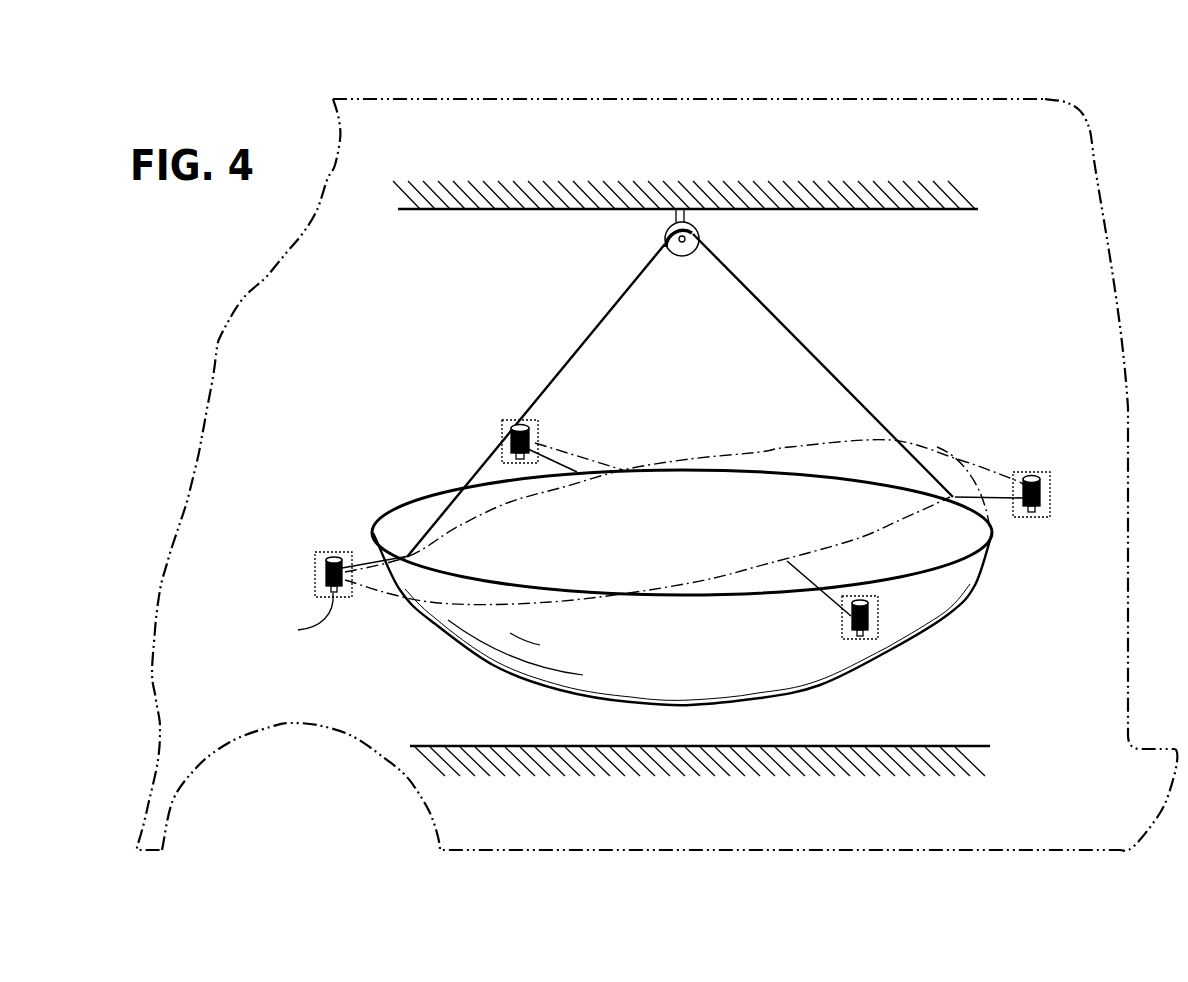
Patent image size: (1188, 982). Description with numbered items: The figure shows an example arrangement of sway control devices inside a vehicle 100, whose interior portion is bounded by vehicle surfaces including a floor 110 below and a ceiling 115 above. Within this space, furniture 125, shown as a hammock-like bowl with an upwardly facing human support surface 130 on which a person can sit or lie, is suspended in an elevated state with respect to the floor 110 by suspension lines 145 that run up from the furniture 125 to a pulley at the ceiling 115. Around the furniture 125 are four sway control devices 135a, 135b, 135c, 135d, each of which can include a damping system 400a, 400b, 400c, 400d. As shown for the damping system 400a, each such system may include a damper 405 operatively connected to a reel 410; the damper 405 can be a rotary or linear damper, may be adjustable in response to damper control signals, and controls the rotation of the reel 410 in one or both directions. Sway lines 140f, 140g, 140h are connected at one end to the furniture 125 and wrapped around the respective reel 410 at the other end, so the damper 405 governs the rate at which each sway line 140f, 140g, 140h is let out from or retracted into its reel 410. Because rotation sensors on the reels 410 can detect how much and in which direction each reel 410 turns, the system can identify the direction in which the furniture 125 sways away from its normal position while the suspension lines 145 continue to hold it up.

The vehicle 100 is at (978, 98).
The floor 110 is at (918, 746).
The ceiling 115 is at (905, 210).
The furniture 125 is at (935, 628).
The human support surface 130 is at (827, 547).
The sway control device 135a is at (302, 600).
The sway control device 135b is at (512, 418).
The sway control device 135c is at (1031, 470).
The sway control device 135d is at (852, 630).
The sway line 140f is at (568, 468).
The sway line 140g is at (997, 503).
The sway line 140h is at (832, 598).
The suspension line 145 is at (582, 338).
The damping system 400a is at (275, 541).
The damping system 400b is at (487, 407).
The damping system 400c is at (1065, 459).
The damping system 400d is at (882, 660).
The damper 405 is at (299, 618).
The reel 410 is at (326, 571).